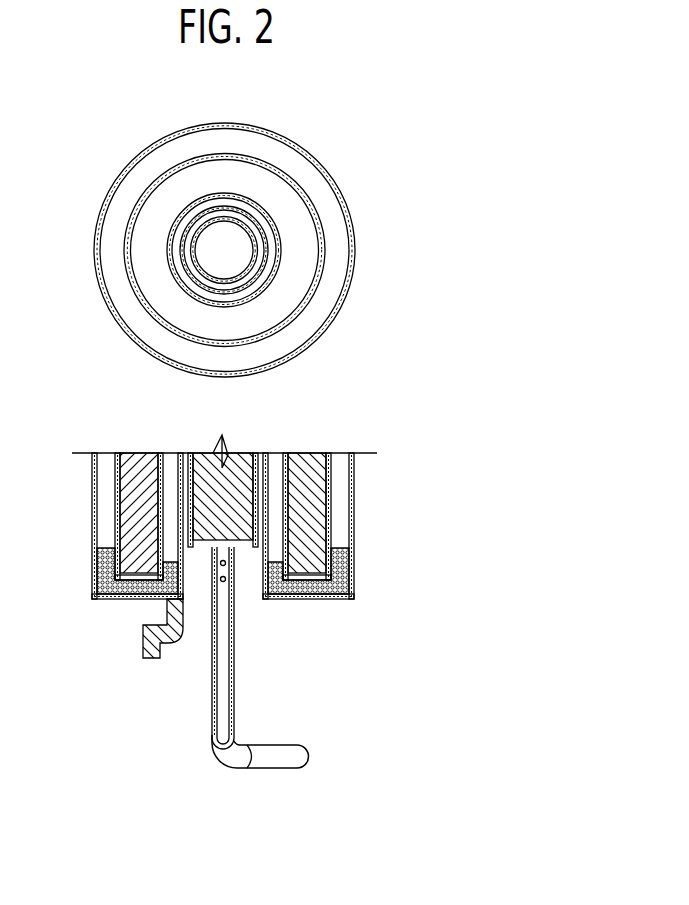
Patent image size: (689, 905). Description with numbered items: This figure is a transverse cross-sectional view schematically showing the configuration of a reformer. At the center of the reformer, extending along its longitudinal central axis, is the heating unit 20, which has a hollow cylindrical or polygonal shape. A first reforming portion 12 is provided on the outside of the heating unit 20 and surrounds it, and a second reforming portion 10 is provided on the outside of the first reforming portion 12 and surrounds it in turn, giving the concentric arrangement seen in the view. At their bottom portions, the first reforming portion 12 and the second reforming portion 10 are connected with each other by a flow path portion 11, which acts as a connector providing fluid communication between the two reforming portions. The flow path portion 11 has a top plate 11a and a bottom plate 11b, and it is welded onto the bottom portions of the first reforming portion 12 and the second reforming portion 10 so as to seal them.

The second reforming portion 10 is at (333, 510).
The flow path portion 11 is at (353, 578).
The top plate 11a is at (148, 572).
The bottom plate 11b is at (130, 600).
The first reforming portion 12 is at (250, 207).
The heating unit 20 is at (224, 248).